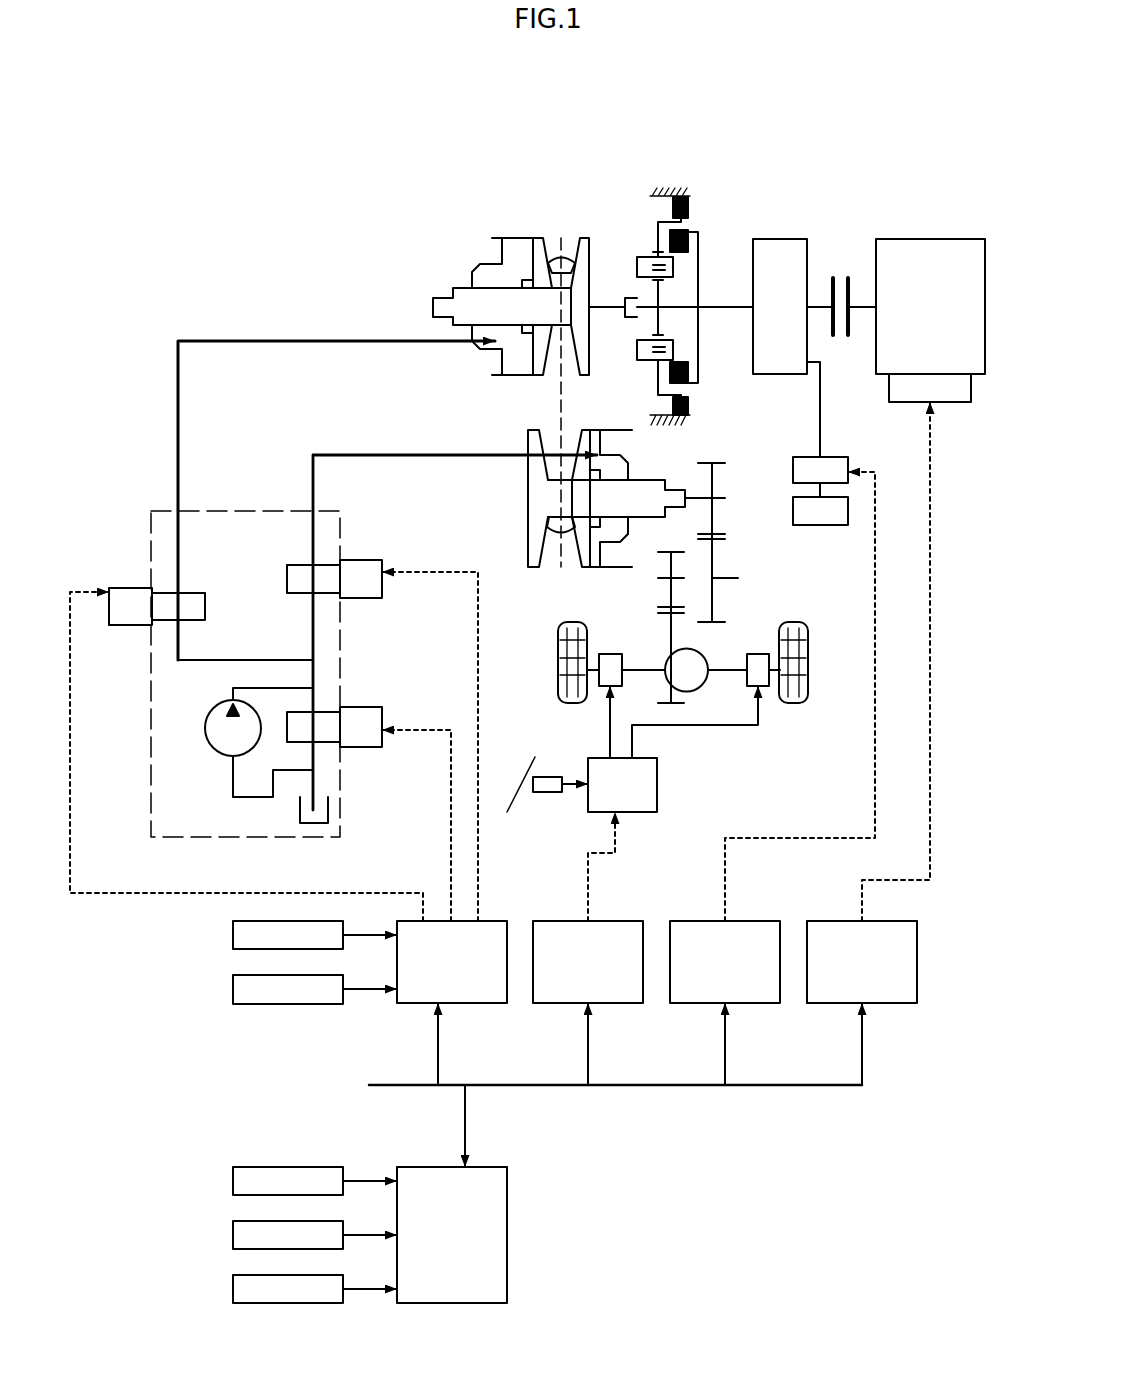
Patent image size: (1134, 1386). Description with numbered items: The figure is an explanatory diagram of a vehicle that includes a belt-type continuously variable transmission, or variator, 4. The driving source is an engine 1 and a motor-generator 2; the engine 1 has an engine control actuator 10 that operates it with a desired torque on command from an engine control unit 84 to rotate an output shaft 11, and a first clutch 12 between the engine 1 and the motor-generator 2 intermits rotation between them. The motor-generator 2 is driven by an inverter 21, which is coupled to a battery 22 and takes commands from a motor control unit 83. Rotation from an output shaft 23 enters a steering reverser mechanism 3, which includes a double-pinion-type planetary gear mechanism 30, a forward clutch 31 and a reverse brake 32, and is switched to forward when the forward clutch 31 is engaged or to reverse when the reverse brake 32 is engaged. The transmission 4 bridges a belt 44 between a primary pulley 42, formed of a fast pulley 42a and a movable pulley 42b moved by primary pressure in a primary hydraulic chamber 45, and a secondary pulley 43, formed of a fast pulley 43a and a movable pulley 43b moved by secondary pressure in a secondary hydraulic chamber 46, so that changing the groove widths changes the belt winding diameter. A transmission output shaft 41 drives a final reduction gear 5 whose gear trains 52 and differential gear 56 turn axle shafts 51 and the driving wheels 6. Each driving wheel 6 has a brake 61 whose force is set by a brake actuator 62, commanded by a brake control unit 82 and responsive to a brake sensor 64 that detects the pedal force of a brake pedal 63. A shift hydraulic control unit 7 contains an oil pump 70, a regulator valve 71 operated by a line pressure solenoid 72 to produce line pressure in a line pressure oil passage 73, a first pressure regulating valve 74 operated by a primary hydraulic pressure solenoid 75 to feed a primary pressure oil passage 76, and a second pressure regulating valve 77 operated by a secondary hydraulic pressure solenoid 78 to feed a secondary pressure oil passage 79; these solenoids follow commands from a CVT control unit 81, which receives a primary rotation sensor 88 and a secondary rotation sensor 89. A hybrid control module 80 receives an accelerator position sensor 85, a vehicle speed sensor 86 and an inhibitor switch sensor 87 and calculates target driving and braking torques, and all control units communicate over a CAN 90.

The engine 1 is at (940, 239).
The engine control actuator 10 is at (957, 403).
The output shaft 11 is at (855, 303).
The first clutch 12 is at (838, 278).
The motor-generator 2 is at (790, 239).
The inverter 21 is at (812, 457).
The battery 22 is at (795, 505).
The output shaft 23 is at (717, 303).
The steering reverser mechanism 3 is at (677, 183).
The double-pinion-type planetary gear mechanism 30 is at (662, 323).
The forward clutch 31 is at (690, 230).
The reverse brake 32 is at (690, 197).
The transmission 4 is at (562, 183).
The transmission output shaft 41 is at (697, 495).
The primary pulley 42 is at (477, 267).
The fast pulley 42a is at (583, 237).
The movable pulley 42b is at (538, 237).
The secondary pulley 43 is at (525, 542).
The fast pulley 43a is at (527, 437).
The movable pulley 43b is at (588, 430).
The belt 44 is at (556, 540).
The primary hydraulic chamber 45 is at (517, 255).
The secondary hydraulic chamber 46 is at (603, 540).
The final reduction gear 5 is at (743, 551).
The axle shafts 51 is at (632, 670).
The gear trains 52 is at (713, 599).
The differential gear 56 is at (697, 648).
The driving wheels 6 is at (560, 680).
The brake 61 is at (600, 690).
The brake actuator 62 is at (658, 782).
The brake pedal 63 is at (521, 785).
The brake sensor 64 is at (547, 792).
The shift hydraulic control unit 7 is at (170, 512).
The oil pump 70 is at (210, 745).
The regulator valve 71 is at (323, 712).
The line pressure solenoid 72 is at (372, 747).
The line pressure oil passage 73 is at (205, 662).
The first pressure regulating valve 74 is at (170, 592).
The primary hydraulic pressure solenoid 75 is at (115, 627).
The primary pressure oil passage 76 is at (175, 528).
The second pressure regulating valve 77 is at (323, 563).
The secondary hydraulic pressure solenoid 78 is at (370, 598).
The secondary pressure oil passage 79 is at (315, 537).
The hybrid control module 80 is at (510, 1210).
The CVT control unit 81 is at (480, 1007).
The brake control unit 82 is at (615, 1007).
The motor control unit 83 is at (752, 1007).
The engine control unit 84 is at (889, 1007).
The accelerator position sensor 85 is at (233, 1181).
The vehicle speed sensor 86 is at (233, 1235).
The inhibitor switch sensor 87 is at (233, 1289).
The primary rotation sensor 88 is at (233, 935).
The secondary rotation sensor 89 is at (233, 989).
The CAN 90 is at (770, 1090).